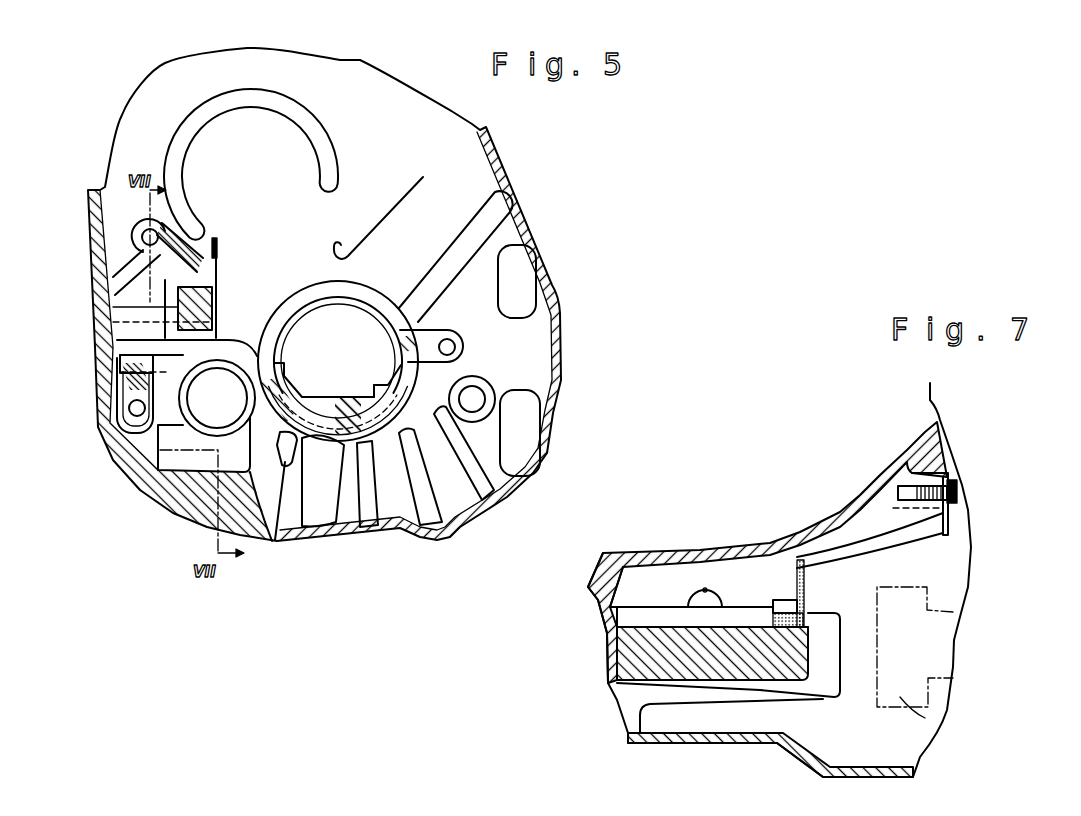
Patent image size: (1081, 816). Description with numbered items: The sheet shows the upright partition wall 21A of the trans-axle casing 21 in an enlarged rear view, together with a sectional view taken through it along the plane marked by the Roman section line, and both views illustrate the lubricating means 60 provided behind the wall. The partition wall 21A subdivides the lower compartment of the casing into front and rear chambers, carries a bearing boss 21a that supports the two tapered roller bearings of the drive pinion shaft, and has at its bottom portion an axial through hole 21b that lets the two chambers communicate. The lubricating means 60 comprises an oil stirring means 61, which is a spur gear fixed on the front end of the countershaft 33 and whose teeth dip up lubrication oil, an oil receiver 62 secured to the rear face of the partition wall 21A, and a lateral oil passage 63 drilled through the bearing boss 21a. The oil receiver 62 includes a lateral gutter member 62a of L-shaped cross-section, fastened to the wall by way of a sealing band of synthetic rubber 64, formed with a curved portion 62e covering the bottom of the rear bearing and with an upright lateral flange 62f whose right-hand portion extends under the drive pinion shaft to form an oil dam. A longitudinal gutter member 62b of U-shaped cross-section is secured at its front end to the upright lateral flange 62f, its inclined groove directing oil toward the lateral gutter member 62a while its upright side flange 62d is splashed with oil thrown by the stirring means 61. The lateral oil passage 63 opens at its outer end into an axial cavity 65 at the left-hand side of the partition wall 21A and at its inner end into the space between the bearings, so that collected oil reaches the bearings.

In FIG. 5, the trans-axle casing 21 is at (517, 203).
In FIG. 5, the bearing boss 21a is at (366, 445).
In FIG. 5, the axial through hole 21b is at (277, 543).
In FIG. 5, the upright partition wall 21A is at (393, 513).
In FIG. 7, the countershaft 33 is at (945, 655).
In FIG. 5, the lubricating means 60 is at (132, 315).
In FIG. 7, the lubricating means 60 is at (859, 656).
In FIG. 7, the oil stirring means 61 is at (925, 718).
In FIG. 5, the oil receiver 62 is at (284, 385).
In FIG. 7, the oil receiver 62 is at (839, 555).
In FIG. 5, the lateral gutter member 62a is at (112, 352).
In FIG. 7, the lateral gutter member 62a is at (804, 608).
In FIG. 5, the longitudinal gutter member 62b is at (216, 284).
In FIG. 7, the longitudinal gutter member 62b is at (898, 535).
In FIG. 5, the upright side flange 62d is at (220, 238).
In FIG. 7, the upright side flange 62d is at (953, 537).
In FIG. 5, the curved portion 62e is at (420, 335).
In FIG. 5, the upright lateral flange 62f is at (360, 380).
In FIG. 7, the lateral oil passage 63 is at (705, 590).
In FIG. 5, the sealing band of synthetic rubber 64 is at (327, 437).
In FIG. 7, the sealing band of synthetic rubber 64 is at (780, 600).
In FIG. 5, the axial cavity 65 is at (246, 317).
In FIG. 7, the axial cavity 65 is at (667, 594).